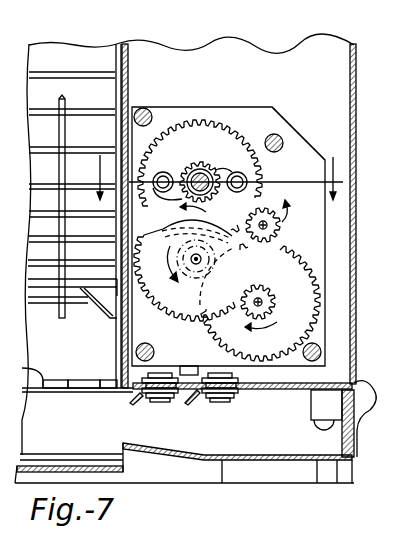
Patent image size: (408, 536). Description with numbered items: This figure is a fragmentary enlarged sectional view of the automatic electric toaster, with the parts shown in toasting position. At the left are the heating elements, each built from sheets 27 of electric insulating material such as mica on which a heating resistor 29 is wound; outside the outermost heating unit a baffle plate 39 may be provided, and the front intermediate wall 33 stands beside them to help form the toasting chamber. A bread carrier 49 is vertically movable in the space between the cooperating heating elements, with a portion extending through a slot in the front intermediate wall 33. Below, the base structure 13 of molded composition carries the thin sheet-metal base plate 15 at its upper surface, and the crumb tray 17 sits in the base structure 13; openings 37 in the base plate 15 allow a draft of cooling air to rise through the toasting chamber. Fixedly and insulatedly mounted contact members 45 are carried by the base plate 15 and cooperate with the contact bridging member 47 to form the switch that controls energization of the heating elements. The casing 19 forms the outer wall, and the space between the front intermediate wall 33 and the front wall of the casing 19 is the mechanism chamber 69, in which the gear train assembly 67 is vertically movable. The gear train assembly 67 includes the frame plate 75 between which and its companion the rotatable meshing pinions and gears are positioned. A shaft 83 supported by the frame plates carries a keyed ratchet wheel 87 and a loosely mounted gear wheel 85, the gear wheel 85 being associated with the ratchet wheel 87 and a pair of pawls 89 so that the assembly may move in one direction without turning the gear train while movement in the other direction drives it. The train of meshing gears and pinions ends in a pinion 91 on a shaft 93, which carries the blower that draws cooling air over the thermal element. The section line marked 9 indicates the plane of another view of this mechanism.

The section line 9- 9 is at (211, 190).
The base structure 13 is at (355, 433).
The base plate 15 is at (300, 390).
The crumb tray 17 is at (194, 462).
The casing 19 is at (357, 91).
The sheets of electric insulating material 27 is at (88, 52).
The heating resistor 29 is at (86, 148).
The front intermediate wall 33 is at (123, 53).
The openings 37 is at (60, 389).
The baffle plates 39 is at (124, 63).
The contact members 45 is at (163, 404).
The contact bridging member 47 is at (237, 384).
The bread carriers 49 is at (89, 300).
The gear train assembly 67 is at (294, 118).
The mechanism chamber 69 is at (339, 63).
The frame plate 75 is at (301, 136).
The shaft 83 is at (198, 176).
The gear wheel 85 is at (204, 120).
The ratchet wheel 87 is at (214, 166).
The pawls 89 is at (163, 171).
The pinion 91 is at (269, 210).
The shaft 93 is at (278, 229).